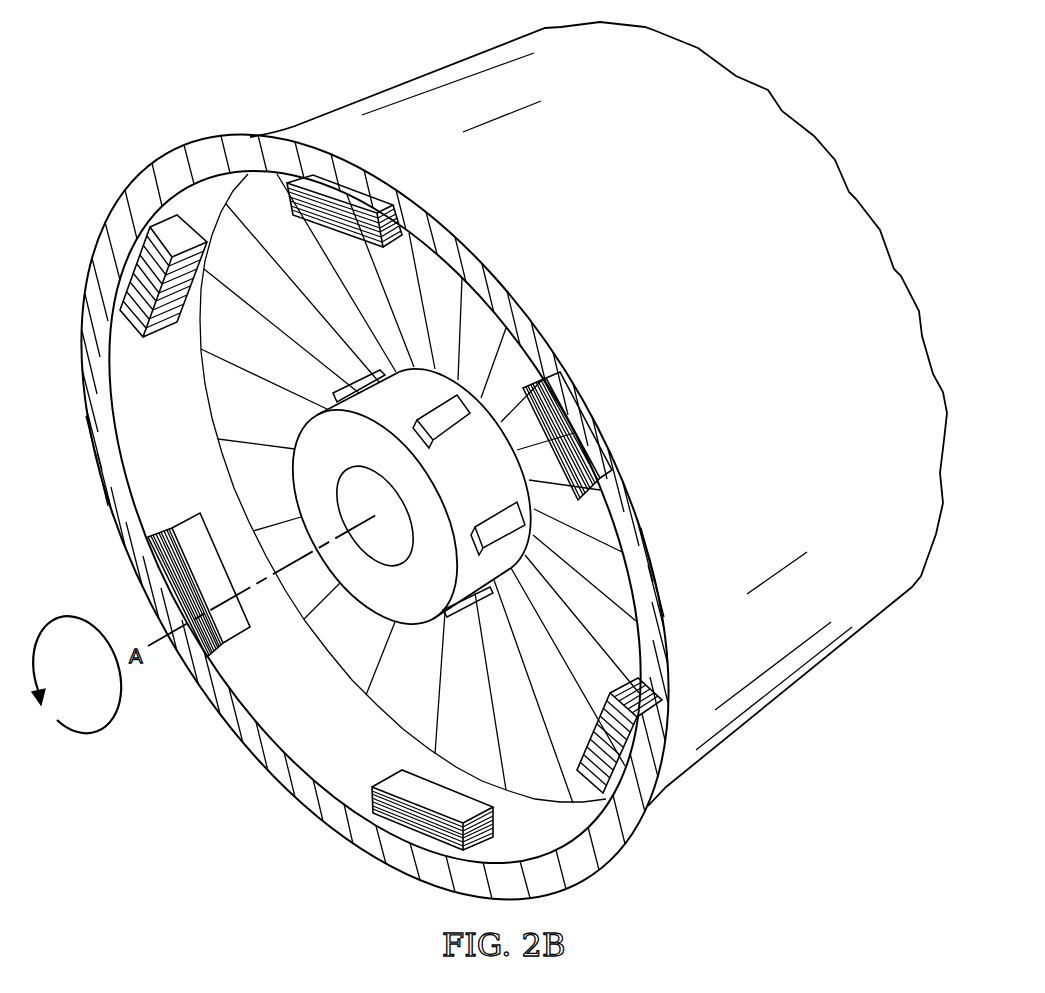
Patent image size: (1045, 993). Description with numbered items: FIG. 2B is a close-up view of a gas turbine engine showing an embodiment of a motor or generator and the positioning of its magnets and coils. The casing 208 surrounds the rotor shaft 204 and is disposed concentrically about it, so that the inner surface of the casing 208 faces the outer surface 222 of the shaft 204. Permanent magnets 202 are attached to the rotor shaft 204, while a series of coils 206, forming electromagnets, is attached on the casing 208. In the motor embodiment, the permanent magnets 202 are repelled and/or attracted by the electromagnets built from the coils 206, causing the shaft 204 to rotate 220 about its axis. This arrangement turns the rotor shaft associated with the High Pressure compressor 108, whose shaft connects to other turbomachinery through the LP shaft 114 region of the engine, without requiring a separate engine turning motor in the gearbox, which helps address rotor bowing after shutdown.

The High Pressure compressor 108 is at (227, 405).
The LP shaft 114 is at (355, 475).
The permanent magnets 202 is at (445, 417).
The rotor shaft 204 is at (395, 510).
The coils 206 is at (238, 627).
The casing 208 is at (406, 84).
The rotation 220 is at (92, 748).
The outer surface 222 is at (398, 625).